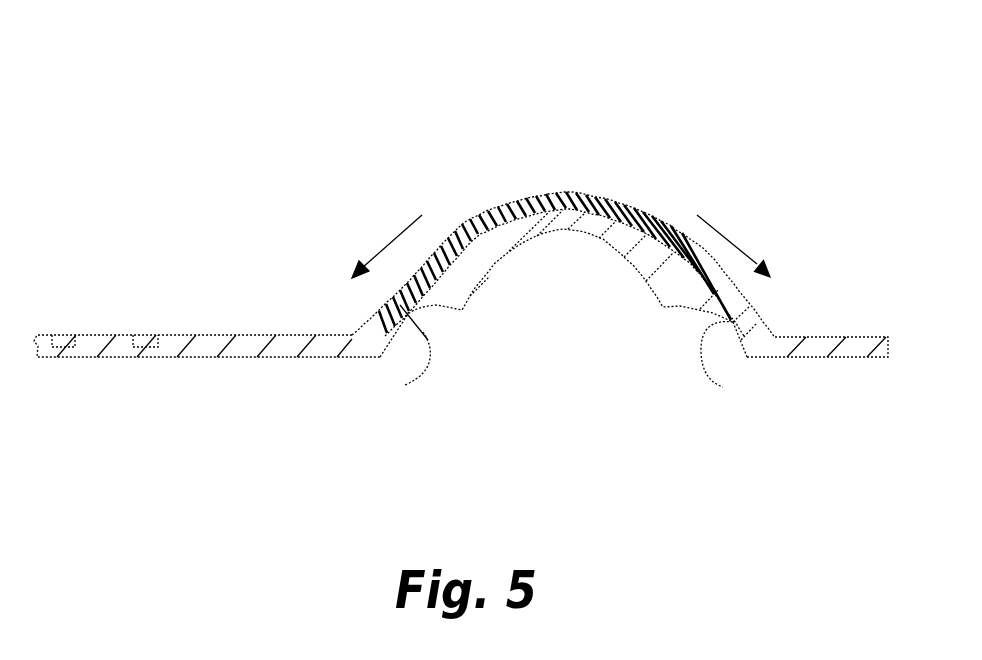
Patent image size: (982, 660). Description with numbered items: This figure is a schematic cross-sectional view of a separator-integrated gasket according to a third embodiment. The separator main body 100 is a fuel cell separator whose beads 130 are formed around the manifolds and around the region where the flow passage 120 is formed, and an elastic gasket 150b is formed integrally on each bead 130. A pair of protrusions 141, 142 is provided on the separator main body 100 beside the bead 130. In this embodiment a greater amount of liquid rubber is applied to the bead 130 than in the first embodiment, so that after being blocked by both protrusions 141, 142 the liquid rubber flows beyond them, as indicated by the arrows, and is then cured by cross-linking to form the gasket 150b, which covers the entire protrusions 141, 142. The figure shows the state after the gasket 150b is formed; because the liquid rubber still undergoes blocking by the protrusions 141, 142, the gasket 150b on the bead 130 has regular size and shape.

The separator main body 100 is at (238, 315).
The flow passage 120 is at (155, 350).
The bead 130 is at (578, 228).
The protrusion 141 is at (405, 385).
The protrusion 142 is at (723, 387).
The elastic gasket 150b is at (481, 213).